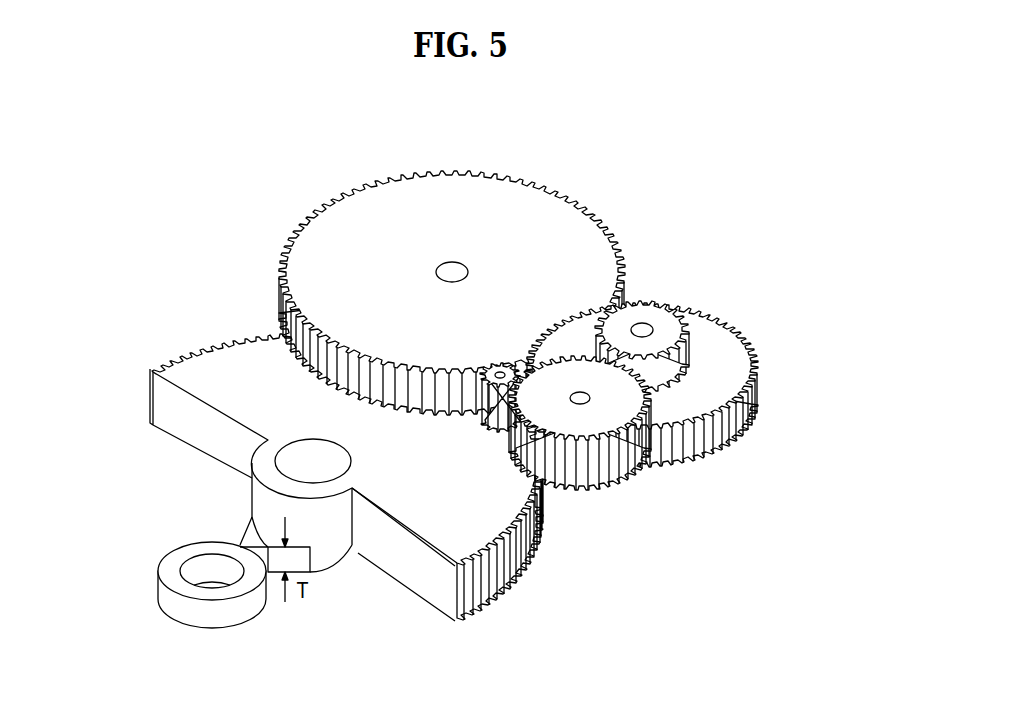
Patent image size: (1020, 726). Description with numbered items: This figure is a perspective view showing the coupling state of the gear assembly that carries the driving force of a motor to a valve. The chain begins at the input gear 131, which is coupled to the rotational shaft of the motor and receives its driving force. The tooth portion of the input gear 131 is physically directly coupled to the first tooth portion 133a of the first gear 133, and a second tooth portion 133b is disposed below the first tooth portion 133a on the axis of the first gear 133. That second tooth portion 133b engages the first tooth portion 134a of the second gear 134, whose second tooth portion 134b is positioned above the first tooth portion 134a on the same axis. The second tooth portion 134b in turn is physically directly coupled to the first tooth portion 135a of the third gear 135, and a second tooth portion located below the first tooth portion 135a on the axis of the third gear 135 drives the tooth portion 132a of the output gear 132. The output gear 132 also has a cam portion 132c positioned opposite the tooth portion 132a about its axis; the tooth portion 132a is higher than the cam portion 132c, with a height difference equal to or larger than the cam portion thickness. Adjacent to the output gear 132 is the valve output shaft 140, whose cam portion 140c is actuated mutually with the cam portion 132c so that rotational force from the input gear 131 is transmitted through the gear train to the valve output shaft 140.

The input gear 131 is at (505, 362).
The output gear 132 is at (237, 388).
The tooth portion 132a is at (230, 335).
The cam portion 132c is at (250, 535).
The first gear 133 is at (627, 398).
The first tooth portion 133a is at (638, 443).
The second tooth portion 133b is at (607, 487).
The second gear 134 is at (705, 338).
The first tooth portion 134a is at (755, 393).
The second tooth portion 134b is at (692, 358).
The third gear 135 is at (453, 230).
The first tooth portion 135a is at (340, 195).
The valve output shaft 140 is at (163, 594).
The cam portion 140c is at (250, 555).